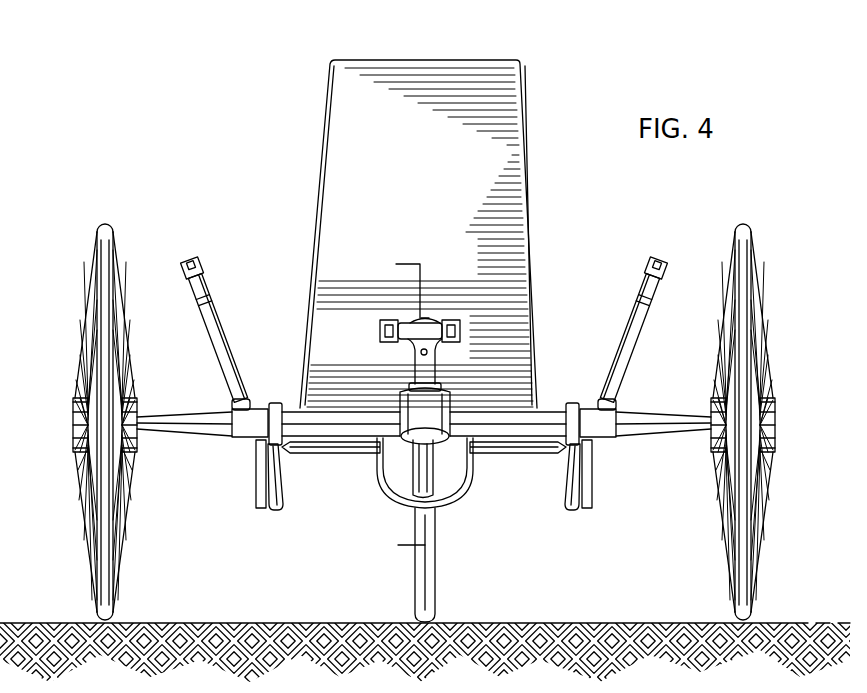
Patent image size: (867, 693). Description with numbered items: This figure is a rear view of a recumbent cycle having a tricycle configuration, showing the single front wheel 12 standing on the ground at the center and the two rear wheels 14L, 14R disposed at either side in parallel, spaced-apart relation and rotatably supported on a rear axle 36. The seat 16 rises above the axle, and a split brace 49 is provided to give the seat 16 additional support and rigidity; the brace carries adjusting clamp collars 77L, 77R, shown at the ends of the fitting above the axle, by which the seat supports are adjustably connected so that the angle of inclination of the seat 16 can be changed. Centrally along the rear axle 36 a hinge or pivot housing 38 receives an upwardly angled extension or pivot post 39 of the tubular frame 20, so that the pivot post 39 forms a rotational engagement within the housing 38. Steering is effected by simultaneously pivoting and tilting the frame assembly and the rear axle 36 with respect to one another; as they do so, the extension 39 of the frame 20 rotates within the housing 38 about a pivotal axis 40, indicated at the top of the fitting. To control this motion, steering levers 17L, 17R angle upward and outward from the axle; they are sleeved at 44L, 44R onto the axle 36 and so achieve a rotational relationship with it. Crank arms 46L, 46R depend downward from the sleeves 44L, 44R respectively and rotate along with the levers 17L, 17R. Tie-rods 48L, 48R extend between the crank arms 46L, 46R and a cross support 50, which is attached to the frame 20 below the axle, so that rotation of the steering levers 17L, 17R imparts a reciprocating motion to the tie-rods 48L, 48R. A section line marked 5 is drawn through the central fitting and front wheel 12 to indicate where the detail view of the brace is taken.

The section line 5- 5 is at (390, 264).
The front wheel 12 is at (432, 603).
The left rear wheel 14L is at (107, 225).
The right rear wheel 14R is at (744, 228).
The seat 16 is at (519, 62).
The left steering lever 17L is at (210, 320).
The right steering lever 17R is at (632, 331).
The tubular frame 20 is at (450, 492).
The axle 36 is at (683, 436).
The pivot housing 38 is at (410, 432).
The pivot post 39 is at (432, 467).
The pivotal axis 40 is at (388, 384).
The left sleeve 44L is at (264, 404).
The right sleeve 44R is at (580, 402).
The left crank arm 46L is at (258, 488).
The right crank arm 46R is at (580, 487).
The left tie-rod 48L is at (281, 496).
The right tie-rod 48R is at (566, 490).
The split brace 49 is at (429, 318).
The cross support 50 is at (322, 452).
The left clamp collar 77L is at (387, 320).
The right clamp collar 77R is at (462, 320).